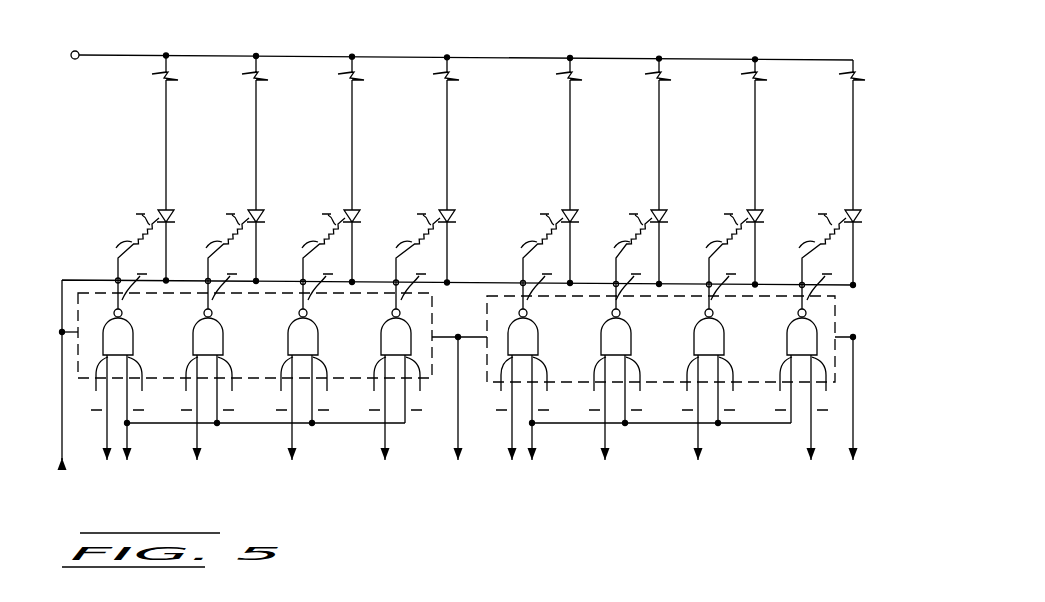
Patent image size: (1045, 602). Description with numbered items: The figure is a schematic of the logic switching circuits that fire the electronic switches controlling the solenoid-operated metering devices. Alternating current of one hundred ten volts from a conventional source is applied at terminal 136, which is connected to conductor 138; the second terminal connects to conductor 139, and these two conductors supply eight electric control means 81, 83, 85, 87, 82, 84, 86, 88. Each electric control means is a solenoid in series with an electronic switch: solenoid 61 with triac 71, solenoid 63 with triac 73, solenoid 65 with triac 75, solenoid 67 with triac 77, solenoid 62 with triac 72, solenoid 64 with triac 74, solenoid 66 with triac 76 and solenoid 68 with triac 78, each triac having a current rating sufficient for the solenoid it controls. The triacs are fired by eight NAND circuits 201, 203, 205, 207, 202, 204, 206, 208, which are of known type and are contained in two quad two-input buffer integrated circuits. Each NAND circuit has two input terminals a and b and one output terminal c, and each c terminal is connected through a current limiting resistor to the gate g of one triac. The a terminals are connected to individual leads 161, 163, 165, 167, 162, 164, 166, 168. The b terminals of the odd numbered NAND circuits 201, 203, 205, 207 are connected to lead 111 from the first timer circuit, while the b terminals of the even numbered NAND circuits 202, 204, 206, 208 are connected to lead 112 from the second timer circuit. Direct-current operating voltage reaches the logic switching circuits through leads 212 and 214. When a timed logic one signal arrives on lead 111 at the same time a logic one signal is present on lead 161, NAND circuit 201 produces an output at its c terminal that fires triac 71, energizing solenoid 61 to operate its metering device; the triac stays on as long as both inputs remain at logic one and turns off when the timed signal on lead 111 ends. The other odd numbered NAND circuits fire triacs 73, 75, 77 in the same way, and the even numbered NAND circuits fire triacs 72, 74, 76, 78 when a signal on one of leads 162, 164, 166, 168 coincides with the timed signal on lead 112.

The terminal 136 is at (96, 25).
The conductor 138 is at (310, 50).
The conductor 139 is at (81, 278).
The solenoid 61 is at (168, 82).
The solenoid 63 is at (255, 76).
The solenoid 65 is at (352, 78).
The solenoid 67 is at (449, 78).
The solenoid 62 is at (571, 80).
The solenoid 64 is at (662, 80).
The solenoid 66 is at (758, 80).
The solenoid 68 is at (852, 82).
The electric control means 81 is at (148, 100).
The electric control means 83 is at (261, 123).
The electric control means 85 is at (356, 125).
The electric control means 87 is at (451, 125).
The electric control means 82 is at (562, 139).
The electric control means 84 is at (658, 139).
The electric control means 86 is at (748, 141).
The electric control means 88 is at (848, 140).
The triac 71 is at (168, 210).
The triac 73 is at (258, 210).
The triac 75 is at (354, 210).
The triac 77 is at (449, 210).
The triac 72 is at (572, 210).
The triac 74 is at (661, 210).
The triac 76 is at (757, 210).
The triac 78 is at (850, 210).
The NAND circuit 201 is at (118, 346).
The NAND circuit 203 is at (208, 346).
The NAND circuit 205 is at (303, 346).
The NAND circuit 207 is at (406, 340).
The NAND circuit 202 is at (526, 346).
The NAND circuit 204 is at (620, 346).
The NAND circuit 206 is at (714, 346).
The NAND circuit 208 is at (798, 342).
The lead 161 is at (105, 445).
The lead 111 is at (127, 445).
The lead 163 is at (197, 445).
The lead 165 is at (292, 447).
The lead 167 is at (385, 452).
The lead 162 is at (512, 432).
The lead 112 is at (532, 447).
The lead 164 is at (605, 447).
The lead 166 is at (698, 447).
The lead 168 is at (811, 452).
The lead 214 is at (458, 428).
The lead 212 is at (853, 432).